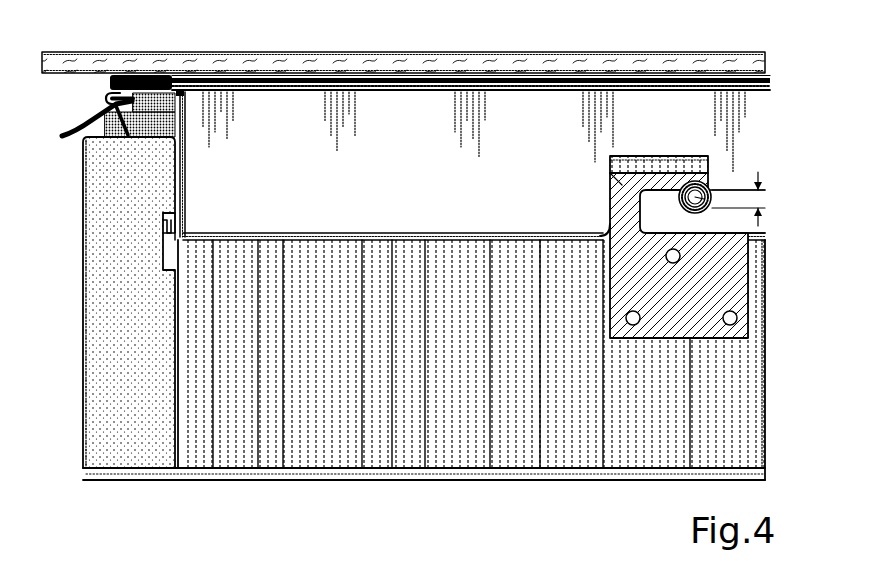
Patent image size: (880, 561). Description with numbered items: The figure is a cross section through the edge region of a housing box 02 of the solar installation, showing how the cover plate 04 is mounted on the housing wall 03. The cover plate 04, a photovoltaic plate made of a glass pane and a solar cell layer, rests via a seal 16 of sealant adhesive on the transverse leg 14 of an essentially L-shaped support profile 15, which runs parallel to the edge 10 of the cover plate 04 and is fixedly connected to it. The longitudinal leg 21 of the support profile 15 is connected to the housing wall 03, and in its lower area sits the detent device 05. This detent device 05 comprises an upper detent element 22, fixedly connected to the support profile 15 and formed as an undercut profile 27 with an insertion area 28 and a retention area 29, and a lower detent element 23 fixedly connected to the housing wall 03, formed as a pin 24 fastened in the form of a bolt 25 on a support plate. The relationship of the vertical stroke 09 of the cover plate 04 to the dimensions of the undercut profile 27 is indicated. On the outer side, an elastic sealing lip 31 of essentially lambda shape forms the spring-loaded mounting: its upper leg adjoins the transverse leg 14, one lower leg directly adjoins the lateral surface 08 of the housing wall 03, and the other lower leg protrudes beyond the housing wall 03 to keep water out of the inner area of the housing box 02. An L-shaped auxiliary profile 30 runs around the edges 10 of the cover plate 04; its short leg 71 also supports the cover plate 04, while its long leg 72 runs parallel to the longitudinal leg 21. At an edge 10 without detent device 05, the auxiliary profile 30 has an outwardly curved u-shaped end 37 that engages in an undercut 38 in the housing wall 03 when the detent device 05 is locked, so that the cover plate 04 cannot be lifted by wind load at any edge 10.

The housing box 02 is at (217, 407).
The housing wall 03 is at (105, 222).
The cover plate 04 is at (200, 60).
The detent device 05 is at (690, 140).
The lateral surface 08 is at (147, 132).
The vertical stroke 09 is at (762, 196).
The edge 10 is at (169, 38).
The transverse leg 14 is at (417, 90).
The support profile 15 is at (411, 220).
The seal 16 is at (328, 87).
The longitudinal leg 21 is at (275, 215).
The upper detent element 22 is at (592, 187).
The lower detent element 23 is at (705, 193).
The pin 24 is at (695, 197).
The bolt 25 is at (696, 197).
The undercut profile 27 is at (598, 215).
The insertion area 28 is at (614, 172).
The retention area 29 is at (686, 184).
The auxiliary profile 30 is at (106, 97).
The sealing lip 31 is at (90, 126).
The u-shaped end 37 is at (166, 232).
The undercut 38 is at (165, 213).
The short leg 71 is at (135, 93).
The long leg 72 is at (187, 185).